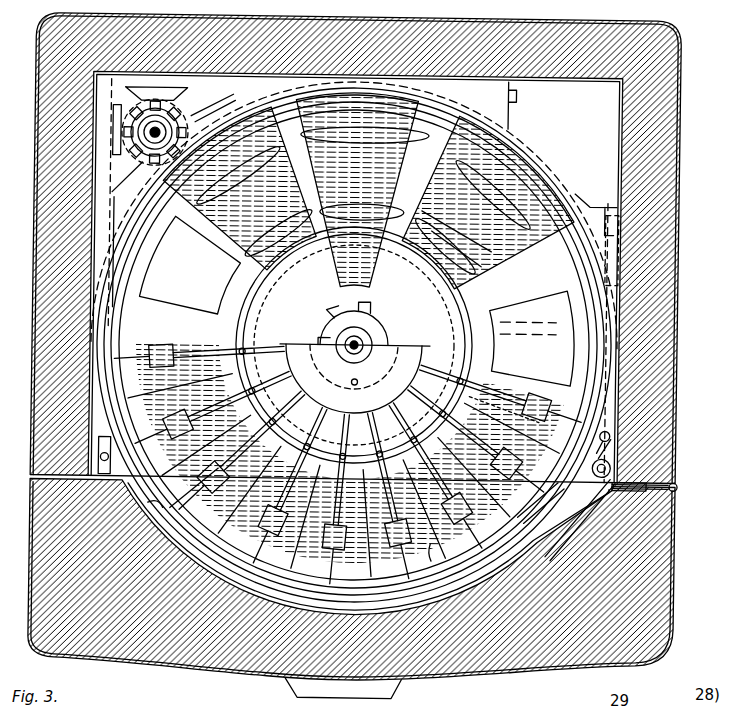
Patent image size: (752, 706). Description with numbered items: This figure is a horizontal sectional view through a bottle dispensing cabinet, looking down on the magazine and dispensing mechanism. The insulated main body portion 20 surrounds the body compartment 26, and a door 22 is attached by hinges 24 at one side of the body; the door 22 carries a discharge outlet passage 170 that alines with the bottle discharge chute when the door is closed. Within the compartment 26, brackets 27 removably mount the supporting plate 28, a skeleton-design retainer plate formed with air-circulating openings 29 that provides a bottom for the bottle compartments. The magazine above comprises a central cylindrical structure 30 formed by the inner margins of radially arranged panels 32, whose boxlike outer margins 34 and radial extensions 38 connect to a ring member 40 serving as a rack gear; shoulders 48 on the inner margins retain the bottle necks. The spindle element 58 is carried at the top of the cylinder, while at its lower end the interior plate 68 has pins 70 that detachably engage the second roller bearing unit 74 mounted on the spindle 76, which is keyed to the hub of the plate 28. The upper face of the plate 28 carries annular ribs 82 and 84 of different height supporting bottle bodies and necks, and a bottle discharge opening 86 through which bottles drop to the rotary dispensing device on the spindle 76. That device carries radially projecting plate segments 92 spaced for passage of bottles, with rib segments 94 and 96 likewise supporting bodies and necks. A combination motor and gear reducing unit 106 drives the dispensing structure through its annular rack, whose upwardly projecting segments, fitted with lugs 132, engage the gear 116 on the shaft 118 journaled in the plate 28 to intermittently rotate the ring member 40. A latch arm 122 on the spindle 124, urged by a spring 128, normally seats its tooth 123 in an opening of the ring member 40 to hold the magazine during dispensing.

The main body portion 20 is at (669, 120).
The door 22 is at (677, 614).
The hinges 24 is at (681, 477).
The body compartment 26 is at (118, 197).
The brackets 27 is at (108, 137).
The supporting plate 28 is at (609, 273).
The air-circulating openings 29 is at (560, 313).
The central cylindrical structure 30 is at (388, 354).
The radially arranged panels 32 is at (200, 438).
The boxlike outer margins 34 is at (159, 352).
The radial extensions 38 is at (188, 517).
The ring member 40 is at (155, 508).
The shoulders 48 is at (342, 417).
The spindle element 58 is at (347, 357).
The interior plate 68 is at (412, 388).
The pins 70 is at (358, 380).
The second roller bearing unit 74 is at (362, 330).
The spindle 76 is at (352, 332).
The annular rib 82 is at (139, 261).
The annular rib 84 is at (293, 250).
The bottle discharge opening 86 is at (510, 421).
The plate segments 92 is at (323, 181).
The rib segment 94 is at (470, 152).
The rib segment 96 is at (440, 225).
The combination motor and gear reducing unit 106 is at (137, 185).
The gear 116 is at (157, 121).
The shaft 118 is at (198, 128).
The latch arm 122 is at (562, 512).
The tooth 123 is at (534, 526).
The spindle 124 is at (621, 461).
The spring 128 is at (627, 422).
The lugs 132 is at (243, 118).
The discharge outlet passage 170 is at (399, 692).